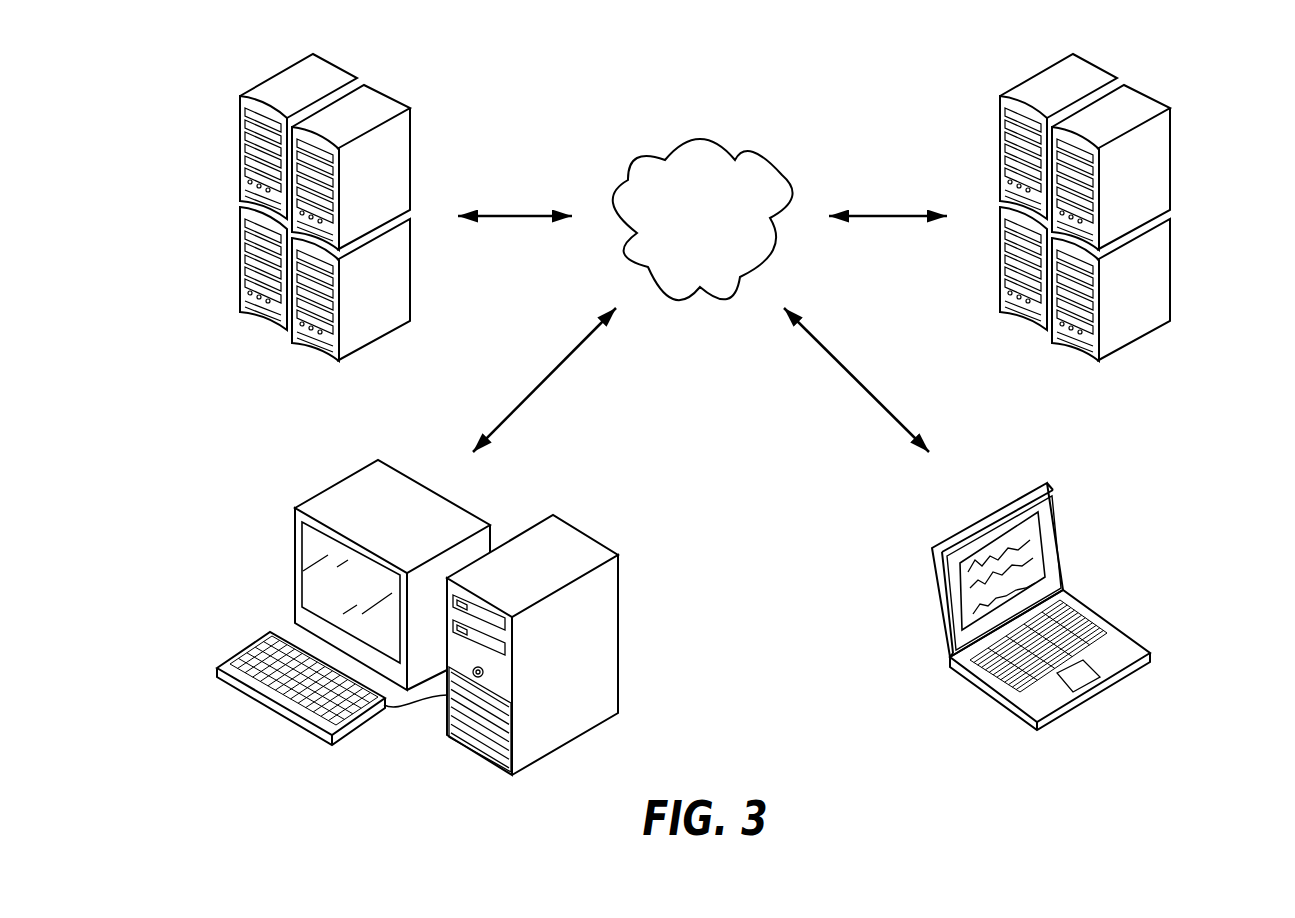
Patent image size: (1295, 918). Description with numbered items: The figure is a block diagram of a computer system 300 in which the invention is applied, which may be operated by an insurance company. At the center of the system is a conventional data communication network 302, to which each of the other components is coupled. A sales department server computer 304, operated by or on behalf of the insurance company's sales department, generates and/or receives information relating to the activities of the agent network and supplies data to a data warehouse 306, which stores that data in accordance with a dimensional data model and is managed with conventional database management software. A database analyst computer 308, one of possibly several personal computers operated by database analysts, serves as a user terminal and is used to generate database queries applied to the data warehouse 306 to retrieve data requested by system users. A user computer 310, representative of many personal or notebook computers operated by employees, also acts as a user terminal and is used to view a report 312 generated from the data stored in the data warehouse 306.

The computer system 300 is at (560, 87).
The data communication network 302 is at (715, 137).
The sales department server computer 304 is at (1180, 185).
The data warehouse 306 is at (222, 183).
The database analyst computer 308 is at (275, 548).
The user computer 310 is at (1123, 617).
The report 312 is at (1037, 550).